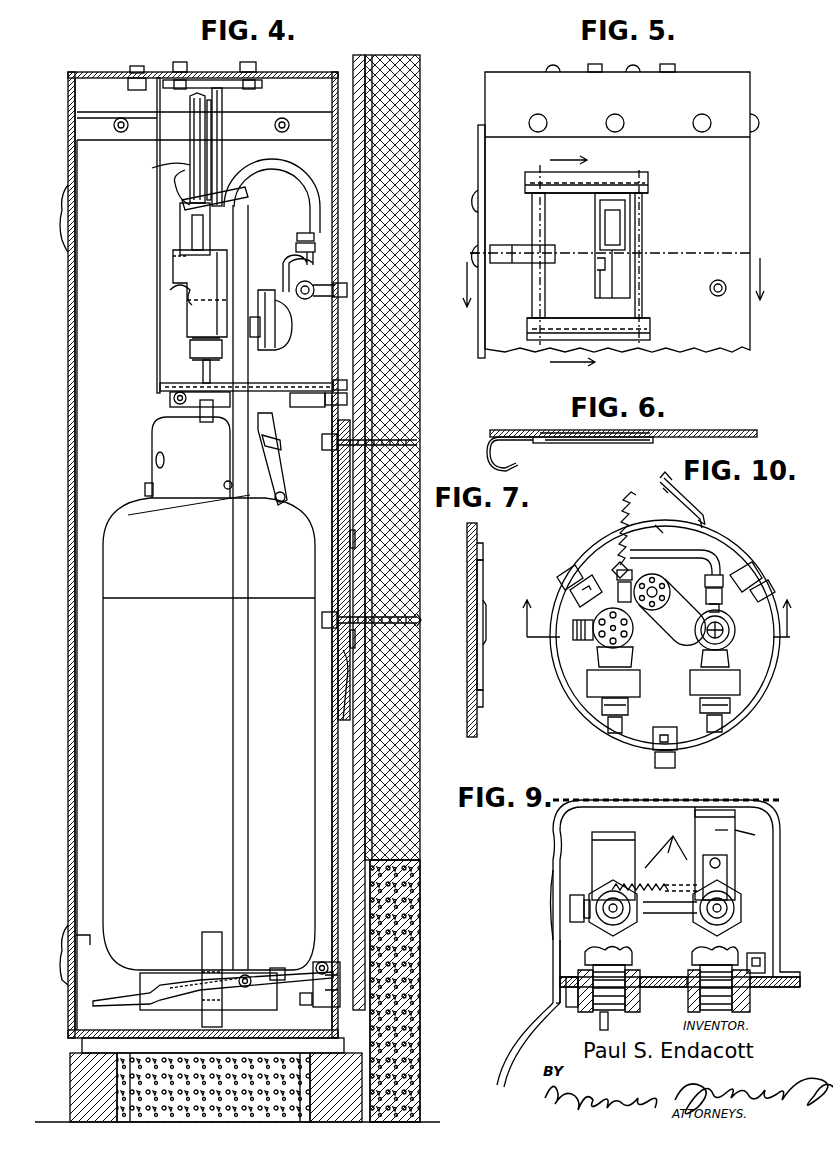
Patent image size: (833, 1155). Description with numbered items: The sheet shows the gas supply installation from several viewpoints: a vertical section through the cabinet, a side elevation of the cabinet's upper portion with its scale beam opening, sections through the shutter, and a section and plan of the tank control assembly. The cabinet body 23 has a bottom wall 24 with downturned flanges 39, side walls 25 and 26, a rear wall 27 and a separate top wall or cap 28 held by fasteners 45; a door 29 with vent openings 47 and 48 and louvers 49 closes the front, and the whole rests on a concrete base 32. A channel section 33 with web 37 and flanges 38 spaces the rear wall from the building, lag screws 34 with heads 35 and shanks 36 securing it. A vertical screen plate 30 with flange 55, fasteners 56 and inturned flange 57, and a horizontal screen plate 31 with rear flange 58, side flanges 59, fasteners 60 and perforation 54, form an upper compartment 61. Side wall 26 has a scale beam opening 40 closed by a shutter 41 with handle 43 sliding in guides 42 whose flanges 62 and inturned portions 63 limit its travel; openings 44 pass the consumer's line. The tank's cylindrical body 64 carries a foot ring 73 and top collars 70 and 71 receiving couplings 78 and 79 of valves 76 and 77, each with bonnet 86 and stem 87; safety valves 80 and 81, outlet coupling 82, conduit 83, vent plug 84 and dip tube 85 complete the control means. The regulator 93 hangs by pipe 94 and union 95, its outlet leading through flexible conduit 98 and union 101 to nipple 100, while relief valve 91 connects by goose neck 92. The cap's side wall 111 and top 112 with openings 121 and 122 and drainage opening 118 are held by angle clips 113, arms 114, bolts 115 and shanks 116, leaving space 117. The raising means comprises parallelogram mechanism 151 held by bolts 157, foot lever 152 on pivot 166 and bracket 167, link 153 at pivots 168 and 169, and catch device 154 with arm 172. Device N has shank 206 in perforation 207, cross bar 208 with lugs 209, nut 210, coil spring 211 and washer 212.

In FIG. 4, the body 23 is at (310, 74).
In FIG. 4, the bottom wall 24 is at (102, 1042).
In FIG. 4, the side wall 25 is at (86, 806).
In FIG. 6, the side wall 26 is at (732, 431).
In FIG. 7, the side wall 26 is at (468, 735).
In FIG. 4, the rear wall 27 is at (338, 827).
In FIG. 4, the top wall or cap 28 is at (96, 75).
In FIG. 5, the top wall or cap 28 is at (712, 75).
In FIG. 4, the door 29 is at (74, 616).
In FIG. 5, the door 29 is at (478, 145).
In FIG. 4, the vertical screen wall or plate 30 is at (152, 166).
In FIG. 4, the horizontal screen wall or plate 31 is at (298, 410).
In FIG. 4, the base 32 is at (74, 1093).
In FIG. 4, the rolled metal section 33 is at (341, 690).
In FIG. 4, the lag screws 34 is at (328, 453).
In FIG. 4, the heads 35 is at (336, 645).
In FIG. 4, the shanks 36 is at (418, 618).
In FIG. 4, the web 37 is at (340, 562).
In FIG. 4, the flanges 38 is at (350, 537).
In FIG. 4, the downturned flanges 39 is at (243, 1057).
In FIG. 5, the scale beam opening 40 is at (638, 282).
In FIG. 6, the scale beam opening 40 is at (630, 432).
In FIG. 5, the shutter 41 is at (532, 294).
In FIG. 6, the shutter 41 is at (570, 443).
In FIG. 7, the shutter 41 is at (483, 648).
In FIG. 5, the horizontal guides 42 is at (600, 185).
In FIG. 5, the handle 43 is at (500, 245).
In FIG. 6, the handle 43 is at (512, 462).
In FIG. 5, the opening 44 is at (716, 296).
In FIG. 4, the fasteners 45 is at (127, 119).
In FIG. 4, the top vent opening 47 is at (78, 248).
In FIG. 4, the bottom vent opening 48 is at (80, 985).
In FIG. 4, the louvers 49 is at (66, 203).
In FIG. 4, the perforation 54 is at (264, 380).
In FIG. 4, the horizontal flange 55 is at (162, 76).
In FIG. 4, the fasteners 56 is at (136, 68).
In FIG. 4, the inturned flange 57 is at (168, 403).
In FIG. 4, the downturned rear flange 58 is at (356, 388).
In FIG. 5, the downturned rear flange 58 is at (420, 360).
In FIG. 4, the downturned side flanges 59 is at (262, 413).
In FIG. 4, the fasteners 60 is at (346, 399).
In FIG. 4, the compartment 61 is at (172, 321).
In FIG. 5, the longitudinal flanges 62 is at (650, 178).
In FIG. 7, the longitudinal flanges 62 is at (480, 548).
In FIG. 5, the inturned portion 63 is at (520, 195).
In FIG. 6, the inturned portion 63 is at (655, 441).
In FIG. 4, the cylindrical body portion 64 is at (118, 733).
In FIG. 9, the collar 70 is at (752, 1000).
In FIG. 9, the collar 71 is at (580, 1015).
In FIG. 4, the foot ring 73 is at (278, 1009).
In FIG. 10, the manually operable valve 76 is at (735, 650).
In FIG. 9, the manually operable valve 76 is at (735, 905).
In FIG. 10, the manually operable valve 77 is at (600, 650).
In FIG. 9, the manually operable valve 77 is at (585, 948).
In FIG. 9, the coupling 78 is at (730, 955).
In FIG. 9, the coupling 79 is at (630, 960).
In FIG. 10, the safety valve 80 is at (668, 603).
In FIG. 9, the safety valve 80 is at (673, 836).
In FIG. 10, the safety valve 81 is at (637, 658).
In FIG. 9, the safety valve 81 is at (605, 845).
In FIG. 10, the outlet coupling 82 is at (738, 630).
In FIG. 9, the outlet coupling 82 is at (745, 802).
In FIG. 10, the conduit 83 is at (728, 560).
In FIG. 9, the conduit 83 is at (663, 915).
In FIG. 10, the vent plug 84 is at (588, 672).
In FIG. 9, the vent plug 84 is at (570, 910).
In FIG. 9, the dip tube 85 is at (612, 1022).
In FIG. 10, the bonnet 86 is at (690, 683).
In FIG. 10, the operating stem 87 is at (605, 728).
In FIG. 9, the operating stem 87 is at (733, 880).
In FIG. 4, the outlet pressure relief valve 91 is at (290, 330).
In FIG. 4, the goose neck 92 is at (282, 270).
In FIG. 4, the pressure reducing regulator 93 is at (182, 294).
In FIG. 4, the pipe 94 is at (203, 372).
In FIG. 4, the union 95 is at (190, 348).
In FIG. 4, the flexible conduit 98 is at (297, 241).
In FIG. 4, the nipple 100 is at (345, 268).
In FIG. 5, the nipple 100 is at (420, 212).
In FIG. 4, the union 101 is at (294, 200).
In FIG. 9, the annular side wall 111 is at (556, 963).
In FIG. 9, the top 112 is at (593, 800).
In FIG. 9, the angle clips 113 is at (566, 985).
In FIG. 10, the vertical arms 114 is at (655, 745).
In FIG. 9, the vertical arms 114 is at (765, 955).
In FIG. 4, the bolts 115 is at (146, 490).
In FIG. 10, the bolts 115 is at (675, 762).
In FIG. 10, the shanks 116 is at (665, 727).
In FIG. 4, the unobstructed space 117 is at (200, 510).
In FIG. 9, the drainage opening 118 is at (556, 1005).
In FIG. 10, the opening 121 is at (570, 600).
In FIG. 9, the opening 121 is at (556, 890).
In FIG. 9, the opening 122 is at (705, 803).
In FIG. 4, the parallelogram mechanism 151 is at (224, 105).
In FIG. 4, the foot lever 152 is at (182, 980).
In FIG. 4, the link 153 is at (232, 784).
In FIG. 4, the catch device 154 is at (210, 930).
In FIG. 4, the bolts 157 is at (242, 67).
In FIG. 5, the bolts 157 is at (660, 66).
In FIG. 4, the pivot 166 is at (342, 968).
In FIG. 4, the bracket 167 is at (347, 978).
In FIG. 4, the pivot 168 is at (250, 977).
In FIG. 4, the pivot 169 is at (247, 208).
In FIG. 4, the vertical arm 172 is at (222, 950).
In FIG. 10, the shank 206 is at (665, 518).
In FIG. 10, the perforation 207 is at (650, 537).
In FIG. 10, the cross bar 208 is at (720, 520).
In FIG. 10, the lugs 209 is at (665, 485).
In FIG. 10, the nut 210 is at (592, 572).
In FIG. 10, the coil spring 211 is at (655, 556).
In FIG. 10, the washer 212 is at (618, 565).